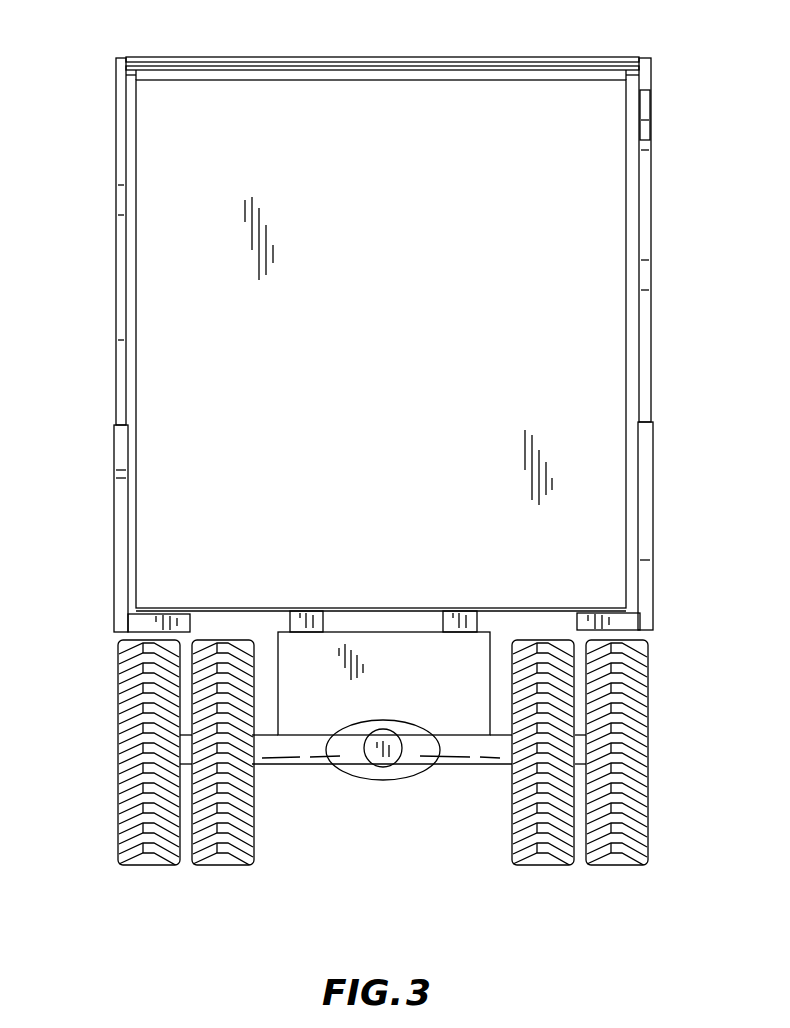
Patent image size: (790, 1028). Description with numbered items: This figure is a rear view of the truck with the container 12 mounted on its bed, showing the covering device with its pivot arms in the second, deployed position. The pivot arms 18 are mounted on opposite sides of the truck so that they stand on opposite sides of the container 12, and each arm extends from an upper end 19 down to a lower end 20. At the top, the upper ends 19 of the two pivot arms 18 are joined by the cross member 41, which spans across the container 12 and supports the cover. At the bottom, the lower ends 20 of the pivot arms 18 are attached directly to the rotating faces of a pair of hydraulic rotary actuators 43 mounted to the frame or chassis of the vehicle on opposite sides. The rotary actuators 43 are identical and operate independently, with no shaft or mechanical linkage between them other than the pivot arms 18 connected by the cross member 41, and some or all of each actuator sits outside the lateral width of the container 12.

The container 12 is at (379, 305).
The pivot arms 18 is at (681, 323).
The upper end 19 is at (648, 54).
The lower end 20 is at (652, 618).
The cross member 41 is at (470, 54).
The hydraulic rotary actuators 43 is at (150, 622).